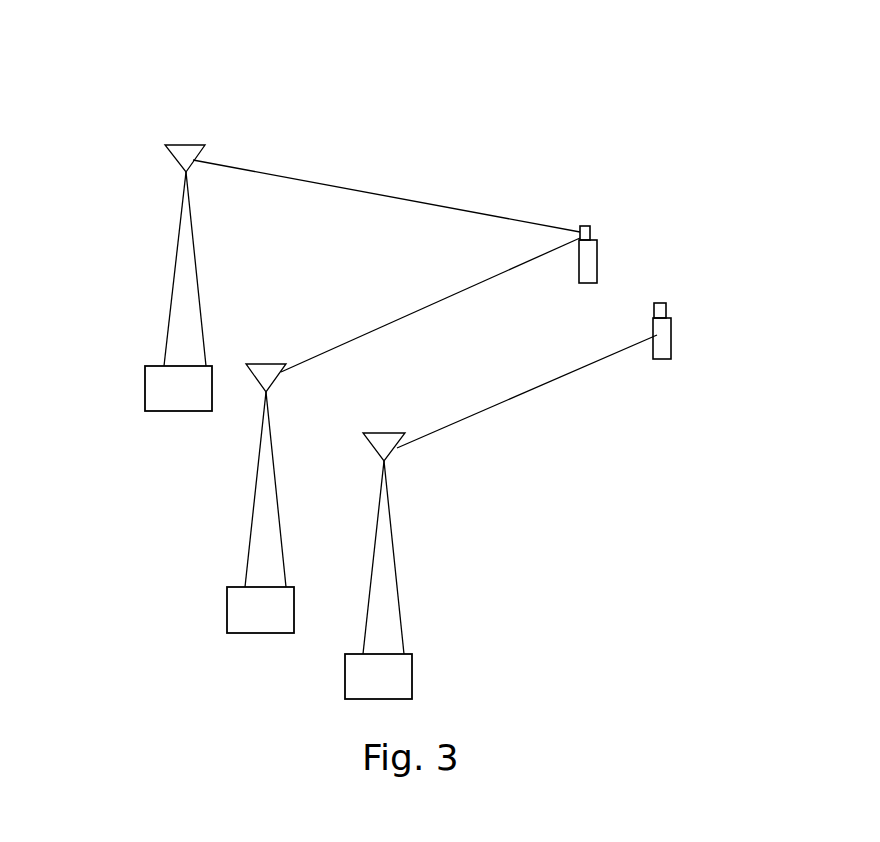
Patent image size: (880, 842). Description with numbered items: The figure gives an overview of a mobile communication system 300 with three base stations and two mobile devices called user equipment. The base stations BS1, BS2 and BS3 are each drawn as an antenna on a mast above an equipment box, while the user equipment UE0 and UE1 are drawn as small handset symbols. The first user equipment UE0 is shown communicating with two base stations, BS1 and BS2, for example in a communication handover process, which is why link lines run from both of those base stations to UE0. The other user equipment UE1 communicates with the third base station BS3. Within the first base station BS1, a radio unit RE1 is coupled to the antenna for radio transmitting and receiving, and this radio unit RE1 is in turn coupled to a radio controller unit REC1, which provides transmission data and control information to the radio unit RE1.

The mobile communication system 300 is at (742, 100).
The radio unit RE1 is at (187, 143).
The first base station BS1 is at (185, 271).
The radio controller unit REC1 is at (145, 388).
The second base station BS2 is at (262, 490).
The third base station BS3 is at (397, 568).
The first user equipment UE0 is at (592, 268).
The second user equipment UE1 is at (667, 345).